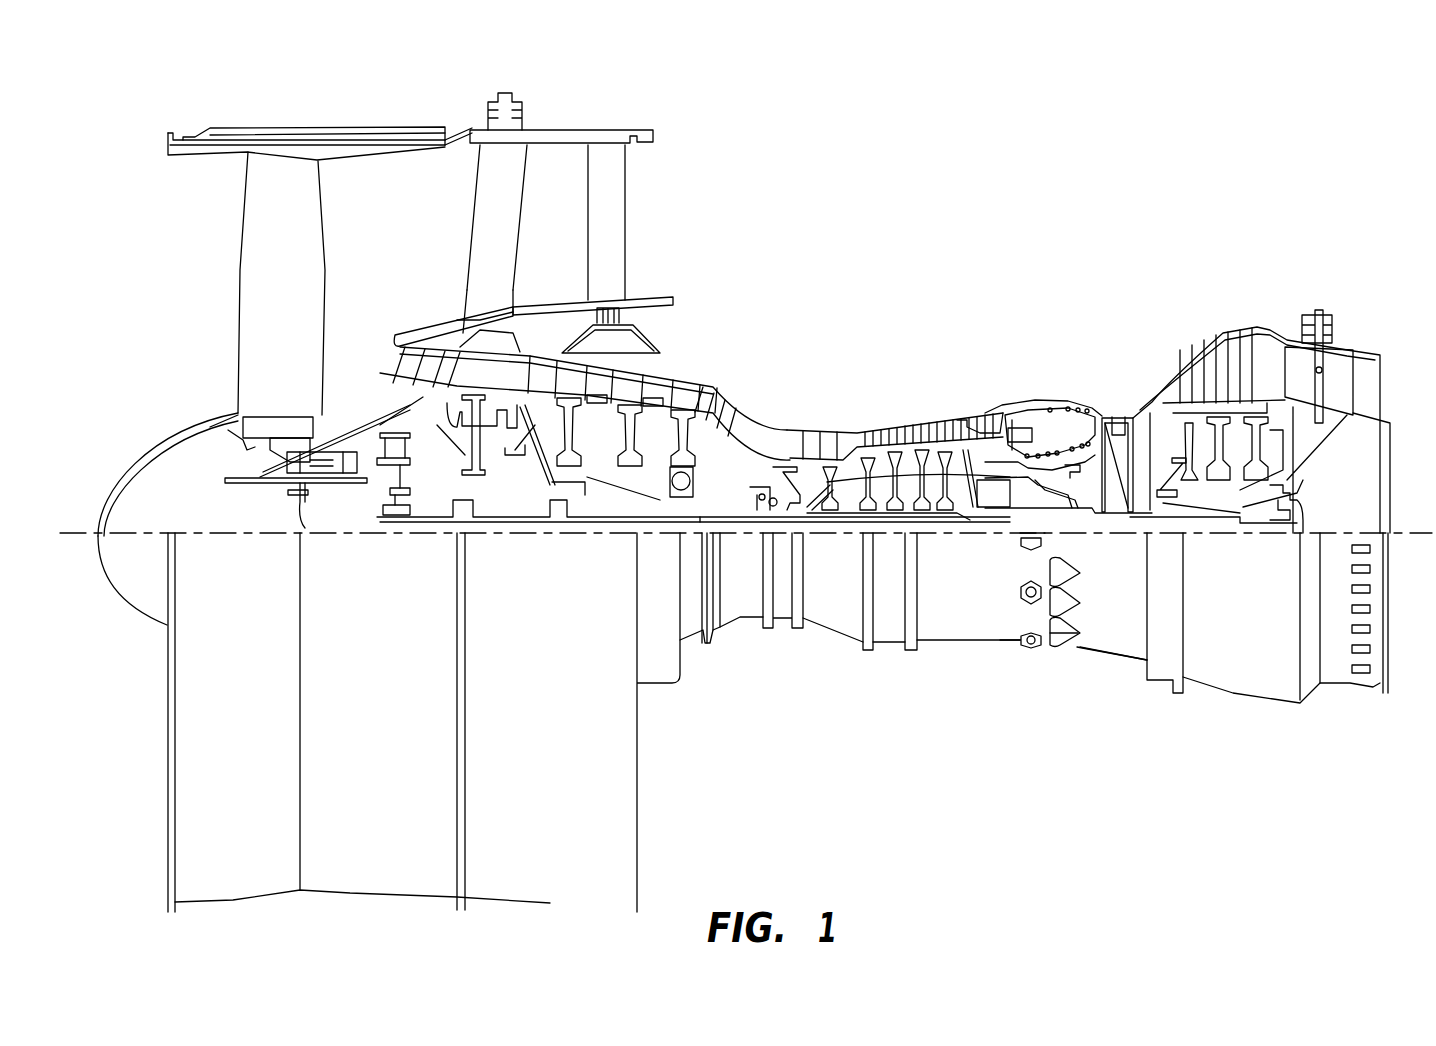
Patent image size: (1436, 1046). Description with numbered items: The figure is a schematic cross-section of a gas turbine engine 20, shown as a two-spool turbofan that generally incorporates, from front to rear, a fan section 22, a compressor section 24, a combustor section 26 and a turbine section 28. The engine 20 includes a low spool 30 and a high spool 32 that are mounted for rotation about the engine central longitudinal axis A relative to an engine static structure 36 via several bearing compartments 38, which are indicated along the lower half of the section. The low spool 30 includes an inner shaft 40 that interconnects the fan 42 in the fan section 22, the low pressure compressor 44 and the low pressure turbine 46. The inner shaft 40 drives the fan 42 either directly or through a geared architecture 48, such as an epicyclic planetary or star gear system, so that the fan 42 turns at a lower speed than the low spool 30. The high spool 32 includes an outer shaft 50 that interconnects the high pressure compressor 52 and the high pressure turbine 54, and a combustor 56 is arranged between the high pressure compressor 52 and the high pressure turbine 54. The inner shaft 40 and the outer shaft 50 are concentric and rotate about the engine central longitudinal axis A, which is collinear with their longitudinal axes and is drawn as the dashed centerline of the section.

The gas turbine engine 20 is at (1108, 183).
The fan section 22 is at (460, 115).
The compressor section 24 is at (1002, 270).
The combustor section 26 is at (1118, 270).
The turbine section 28 is at (1285, 270).
The low spool 30 is at (713, 507).
The high spool 32 is at (965, 458).
The engine static structure 36 is at (888, 645).
The bearing compartments 38 is at (500, 608).
The inner shaft 40 is at (1083, 518).
The fan 42 is at (298, 340).
The low pressure compressor 44 is at (653, 378).
The low pressure turbine 46 is at (1228, 364).
The geared architecture 48 is at (421, 487).
The outer shaft 50 is at (1075, 492).
The high pressure compressor 52 is at (885, 487).
The high pressure turbine 54 is at (1120, 418).
The combustor 56 is at (1057, 435).
The engine central longitudinal axis A is at (1410, 530).